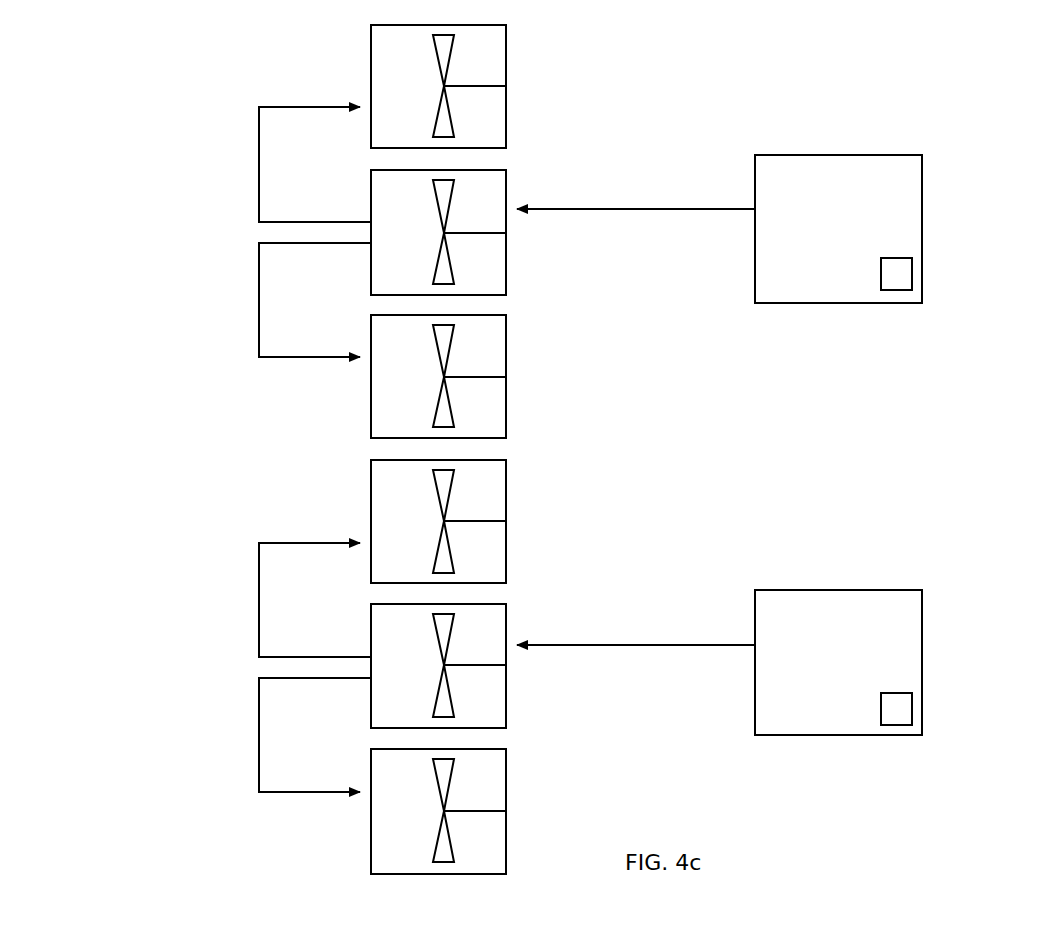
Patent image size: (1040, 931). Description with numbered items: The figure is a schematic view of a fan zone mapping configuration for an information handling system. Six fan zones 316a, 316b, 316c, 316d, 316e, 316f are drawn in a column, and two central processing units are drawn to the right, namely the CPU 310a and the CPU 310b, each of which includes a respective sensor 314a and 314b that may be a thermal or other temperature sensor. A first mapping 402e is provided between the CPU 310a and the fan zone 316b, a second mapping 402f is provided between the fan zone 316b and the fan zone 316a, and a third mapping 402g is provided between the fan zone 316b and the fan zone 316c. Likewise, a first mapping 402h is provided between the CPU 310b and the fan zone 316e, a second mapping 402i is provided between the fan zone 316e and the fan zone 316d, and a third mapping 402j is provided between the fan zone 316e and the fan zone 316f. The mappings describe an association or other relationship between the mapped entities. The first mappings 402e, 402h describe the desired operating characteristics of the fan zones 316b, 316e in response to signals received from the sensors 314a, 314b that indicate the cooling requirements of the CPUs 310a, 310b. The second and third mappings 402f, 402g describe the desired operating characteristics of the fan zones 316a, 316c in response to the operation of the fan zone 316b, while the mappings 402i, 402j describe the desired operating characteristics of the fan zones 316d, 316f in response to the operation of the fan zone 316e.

The fan zone 316a is at (371, 58).
The fan zone 316b is at (507, 263).
The fan zone 316c is at (371, 407).
The fan zone 316d is at (371, 500).
The fan zone 316e is at (507, 697).
The fan zone 316f is at (371, 833).
The first mapping 402e is at (632, 209).
The second mapping 402f is at (259, 160).
The third mapping 402g is at (259, 295).
The first mapping 402h is at (622, 645).
The second mapping 402i is at (259, 603).
The third mapping 402j is at (259, 740).
The central processing unit 310a is at (838, 229).
The central processing unit 310b is at (838, 662).
The sensor 314a is at (912, 270).
The sensor 314b is at (912, 702).